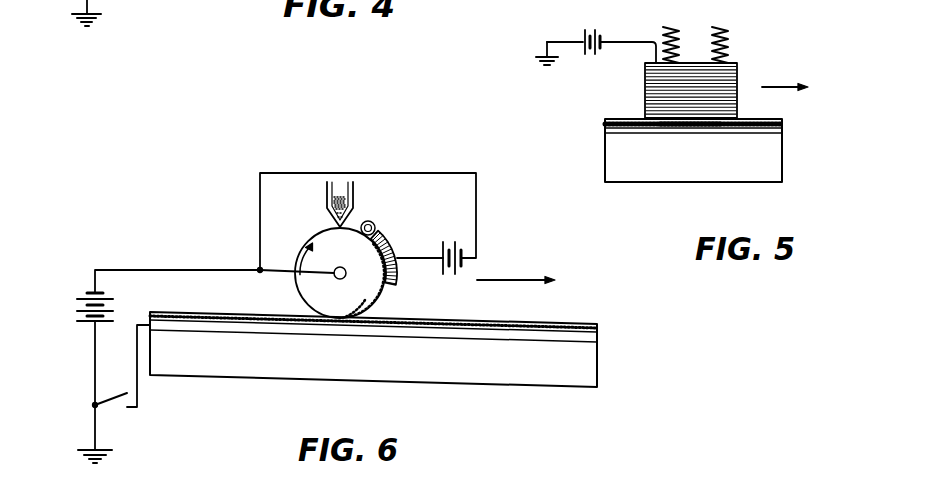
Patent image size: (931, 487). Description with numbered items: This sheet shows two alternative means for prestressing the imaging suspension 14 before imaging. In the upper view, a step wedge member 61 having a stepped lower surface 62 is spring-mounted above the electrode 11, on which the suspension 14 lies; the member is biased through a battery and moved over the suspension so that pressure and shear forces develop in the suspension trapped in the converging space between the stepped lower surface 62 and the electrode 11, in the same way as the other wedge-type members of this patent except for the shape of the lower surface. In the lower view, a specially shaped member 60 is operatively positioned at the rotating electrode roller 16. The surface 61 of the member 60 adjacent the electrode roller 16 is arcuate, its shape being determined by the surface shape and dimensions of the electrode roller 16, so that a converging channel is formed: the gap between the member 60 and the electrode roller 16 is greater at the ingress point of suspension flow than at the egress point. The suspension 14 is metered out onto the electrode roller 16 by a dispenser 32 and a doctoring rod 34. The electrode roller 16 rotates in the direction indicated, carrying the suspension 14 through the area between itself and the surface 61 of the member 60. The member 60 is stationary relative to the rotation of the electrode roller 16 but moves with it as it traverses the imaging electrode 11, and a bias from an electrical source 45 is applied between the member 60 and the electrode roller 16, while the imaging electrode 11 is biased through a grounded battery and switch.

In FIG. 6, the electrode 11 is at (613, 350).
In FIG. 5, the suspension 14 is at (768, 118).
In FIG. 6, the suspension 14 is at (327, 207).
In FIG. 6, the electrode roller 16 is at (318, 241).
In FIG. 6, the dispenser 32 is at (353, 204).
In FIG. 6, the doctoring rod 34 is at (365, 238).
In FIG. 6, the electrical source 45 is at (461, 270).
In FIG. 6, the specially shaped member 60 is at (394, 258).
In FIG. 5, the step wedge member / arcuate surface 61 is at (736, 81).
In FIG. 6, the step wedge member / arcuate surface 61 is at (375, 226).
In FIG. 5, the stepped lower surface 62 is at (702, 129).